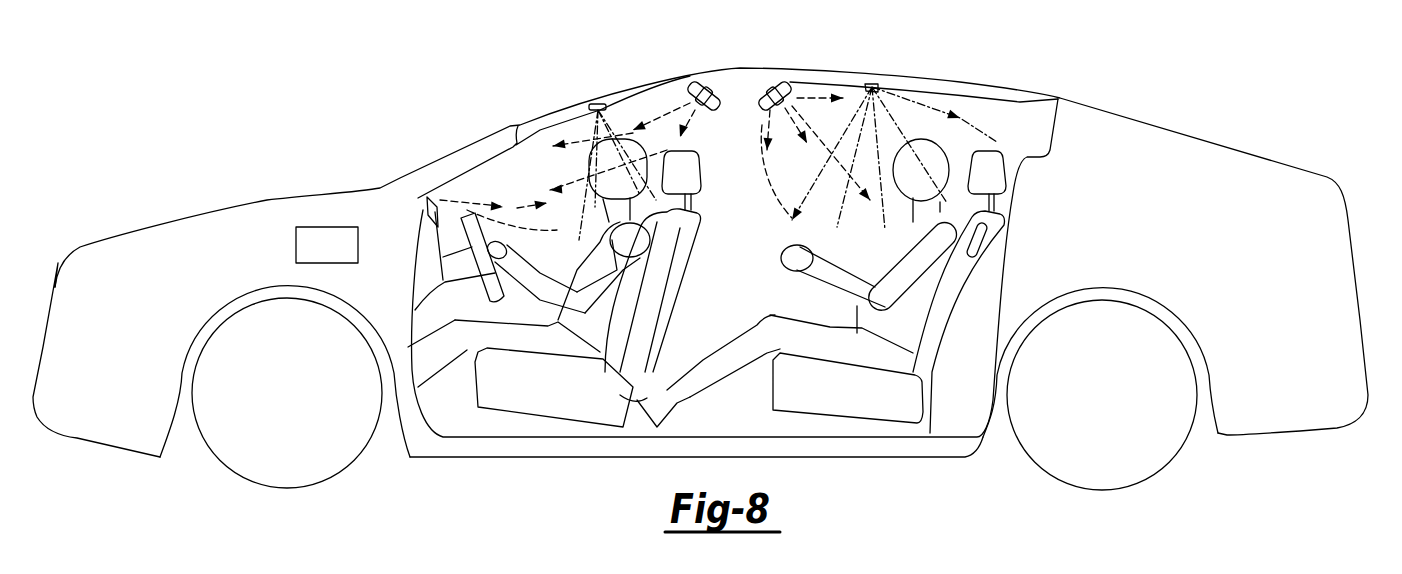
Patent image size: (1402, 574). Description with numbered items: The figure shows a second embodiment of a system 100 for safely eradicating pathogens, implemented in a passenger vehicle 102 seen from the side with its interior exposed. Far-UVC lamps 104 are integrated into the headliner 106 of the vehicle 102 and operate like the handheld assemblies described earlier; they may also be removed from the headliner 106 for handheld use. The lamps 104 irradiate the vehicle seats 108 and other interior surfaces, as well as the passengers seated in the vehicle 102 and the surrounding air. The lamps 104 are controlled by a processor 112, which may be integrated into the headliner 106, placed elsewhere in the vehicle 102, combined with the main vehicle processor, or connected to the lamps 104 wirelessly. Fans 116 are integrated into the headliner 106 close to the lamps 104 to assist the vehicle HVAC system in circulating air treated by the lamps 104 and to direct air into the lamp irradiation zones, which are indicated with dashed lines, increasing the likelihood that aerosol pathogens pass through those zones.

The system 100 is at (1120, 82).
The vehicle 102 is at (1240, 173).
The far-UVC lamps 104 is at (430, 200).
The headliner 106 is at (840, 88).
The vehicle seats 108 is at (528, 399).
The processor 112 is at (327, 245).
The fans 116 is at (738, 73).